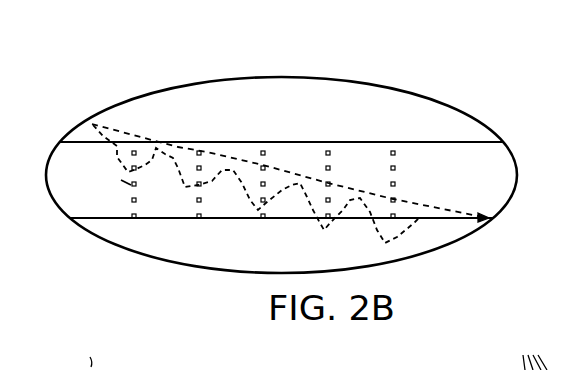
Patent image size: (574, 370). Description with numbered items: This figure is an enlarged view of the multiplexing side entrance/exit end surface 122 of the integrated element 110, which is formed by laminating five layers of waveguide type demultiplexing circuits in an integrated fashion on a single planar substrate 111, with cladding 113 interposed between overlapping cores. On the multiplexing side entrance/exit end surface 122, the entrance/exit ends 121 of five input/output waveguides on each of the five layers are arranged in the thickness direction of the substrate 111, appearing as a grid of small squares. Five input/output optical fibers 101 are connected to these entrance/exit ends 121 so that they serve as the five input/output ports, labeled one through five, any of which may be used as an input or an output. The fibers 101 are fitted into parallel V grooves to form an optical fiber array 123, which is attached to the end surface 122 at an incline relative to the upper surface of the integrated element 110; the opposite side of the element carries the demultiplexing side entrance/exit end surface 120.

The multiplexing side entrance/exit end surface 122 is at (425, 97).
The integrated element 110 is at (471, 141).
The substrate 111 is at (252, 260).
The optical fiber array 123 is at (111, 153).
The input/output optical fiber 101 is at (430, 212).
The entrance/exit ends 121 is at (135, 218).
The demultiplexing side entrance/exit end surface 120 is at (82, 347).
The cladding 113 is at (530, 349).